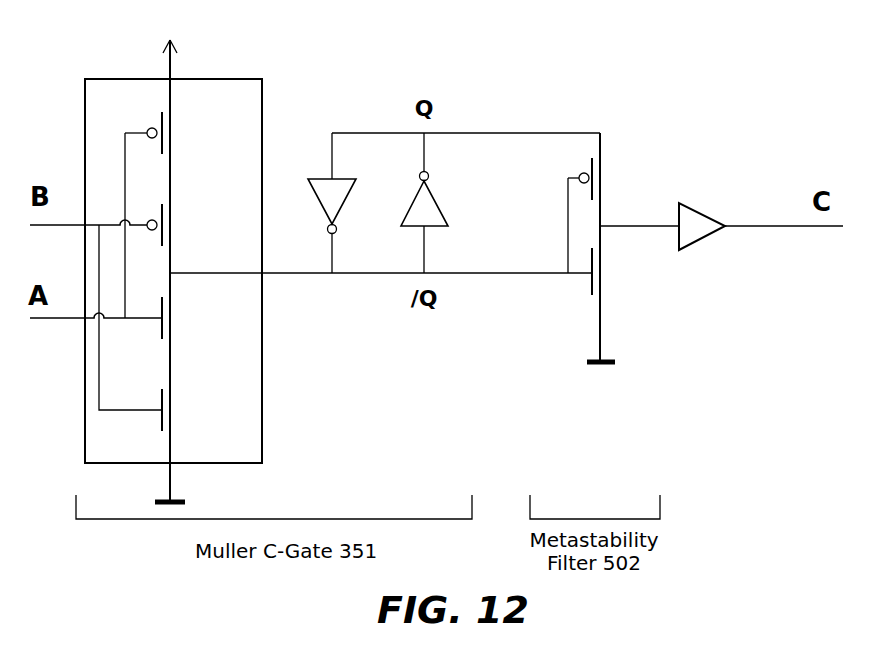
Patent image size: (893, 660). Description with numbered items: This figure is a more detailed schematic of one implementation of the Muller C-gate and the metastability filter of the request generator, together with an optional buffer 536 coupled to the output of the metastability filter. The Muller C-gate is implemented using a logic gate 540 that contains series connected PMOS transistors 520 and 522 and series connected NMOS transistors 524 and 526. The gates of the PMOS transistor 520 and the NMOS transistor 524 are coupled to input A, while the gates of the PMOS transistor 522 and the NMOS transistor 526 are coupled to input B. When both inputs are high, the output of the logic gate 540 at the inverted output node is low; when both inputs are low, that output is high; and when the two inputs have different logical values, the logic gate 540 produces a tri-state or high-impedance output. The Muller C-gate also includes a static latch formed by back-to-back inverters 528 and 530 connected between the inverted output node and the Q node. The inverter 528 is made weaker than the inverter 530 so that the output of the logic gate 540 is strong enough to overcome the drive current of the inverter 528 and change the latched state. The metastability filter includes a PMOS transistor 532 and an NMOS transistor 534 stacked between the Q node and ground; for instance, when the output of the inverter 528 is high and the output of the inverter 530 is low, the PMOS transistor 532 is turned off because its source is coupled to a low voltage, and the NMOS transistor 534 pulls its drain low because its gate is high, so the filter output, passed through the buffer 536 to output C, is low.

The logic gate 540 is at (232, 79).
The PMOS transistor 520 is at (171, 130).
The PMOS transistor 522 is at (171, 222).
The NMOS transistor 524 is at (171, 318).
The NMOS transistor 526 is at (171, 414).
The inverter 528 is at (345, 180).
The inverter 530 is at (435, 208).
The PMOS transistor 532 is at (601, 178).
The NMOS transistor 534 is at (601, 280).
The buffer 536 is at (690, 206).